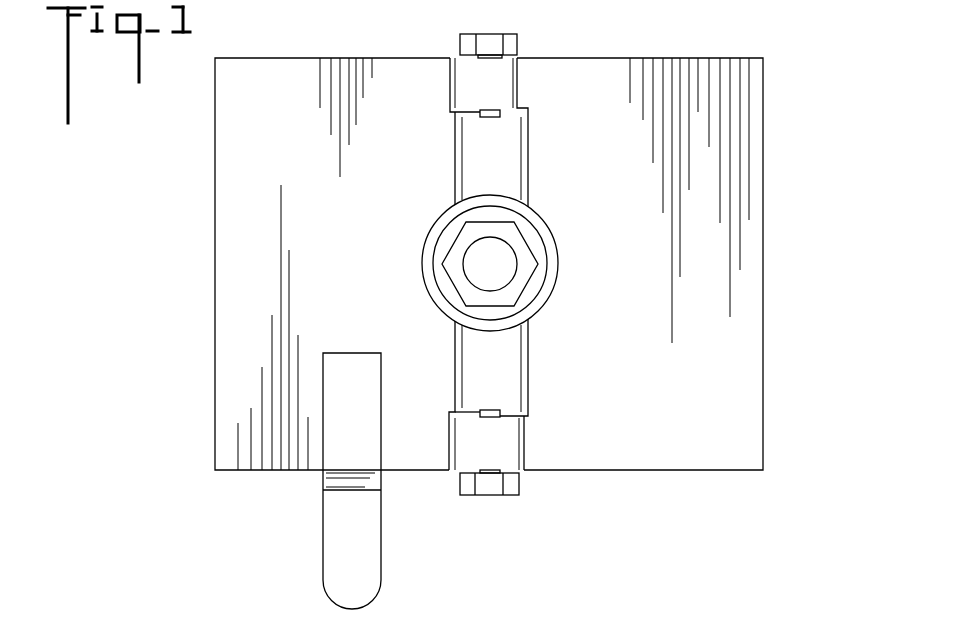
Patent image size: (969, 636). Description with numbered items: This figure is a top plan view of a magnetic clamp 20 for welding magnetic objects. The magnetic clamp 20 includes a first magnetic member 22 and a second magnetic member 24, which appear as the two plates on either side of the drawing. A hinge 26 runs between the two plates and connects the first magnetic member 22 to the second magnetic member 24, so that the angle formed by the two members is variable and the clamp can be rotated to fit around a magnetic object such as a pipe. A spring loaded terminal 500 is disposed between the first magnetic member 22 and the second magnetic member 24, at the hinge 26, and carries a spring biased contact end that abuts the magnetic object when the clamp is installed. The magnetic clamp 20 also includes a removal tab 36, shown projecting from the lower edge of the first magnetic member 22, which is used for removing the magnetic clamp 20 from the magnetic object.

The magnetic clamp 20 is at (819, 47).
The first magnetic member 22 is at (278, 470).
The second magnetic member 24 is at (620, 470).
The hinge 26 is at (528, 390).
The removal tab 36 is at (382, 578).
The spring loaded terminal 500 is at (557, 205).